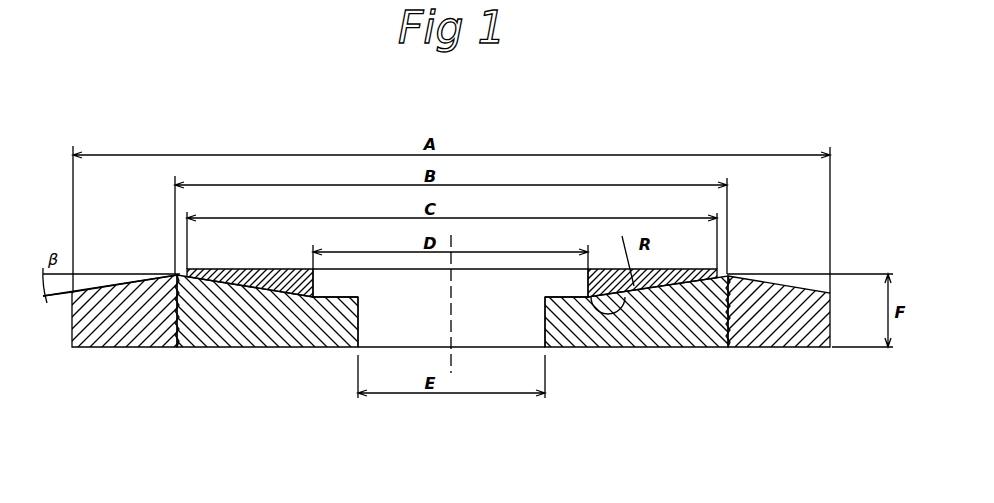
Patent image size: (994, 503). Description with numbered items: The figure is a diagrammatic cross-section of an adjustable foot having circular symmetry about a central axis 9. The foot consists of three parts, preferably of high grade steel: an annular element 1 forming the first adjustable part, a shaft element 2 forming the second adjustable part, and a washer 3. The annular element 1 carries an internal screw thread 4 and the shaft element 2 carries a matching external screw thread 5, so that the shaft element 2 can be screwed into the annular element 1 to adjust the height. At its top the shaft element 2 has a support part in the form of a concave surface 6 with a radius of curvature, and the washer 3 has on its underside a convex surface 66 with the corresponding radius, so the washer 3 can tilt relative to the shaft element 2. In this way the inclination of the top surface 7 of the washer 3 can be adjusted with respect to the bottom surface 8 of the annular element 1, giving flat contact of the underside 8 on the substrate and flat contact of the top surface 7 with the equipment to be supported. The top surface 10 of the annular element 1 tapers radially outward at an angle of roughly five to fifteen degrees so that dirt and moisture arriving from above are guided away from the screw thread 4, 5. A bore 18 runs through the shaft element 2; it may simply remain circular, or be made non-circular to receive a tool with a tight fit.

The annular element 1 is at (777, 327).
The shaft element 2 is at (650, 328).
The washer 3 is at (672, 272).
The internal screw thread 4 is at (148, 347).
The external screw thread 5 is at (197, 348).
The concave surface 6 is at (350, 296).
The convex surface 66 is at (576, 296).
The top surface 7 is at (250, 268).
The bottom surface 8 is at (108, 346).
The axis 9 is at (452, 330).
The top surface 10 is at (108, 284).
The bore 18 is at (362, 330).